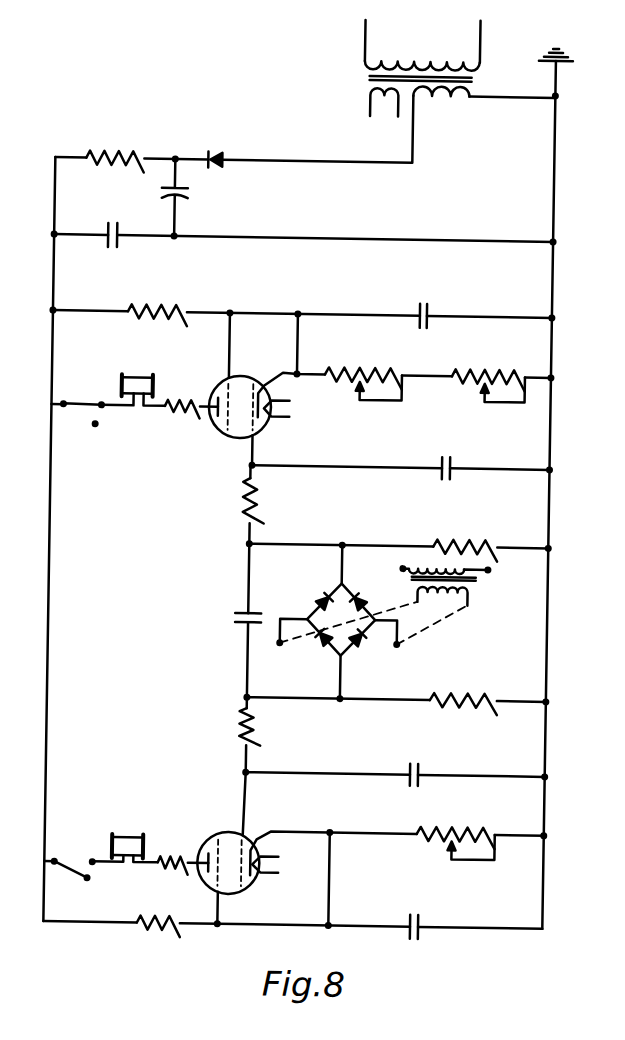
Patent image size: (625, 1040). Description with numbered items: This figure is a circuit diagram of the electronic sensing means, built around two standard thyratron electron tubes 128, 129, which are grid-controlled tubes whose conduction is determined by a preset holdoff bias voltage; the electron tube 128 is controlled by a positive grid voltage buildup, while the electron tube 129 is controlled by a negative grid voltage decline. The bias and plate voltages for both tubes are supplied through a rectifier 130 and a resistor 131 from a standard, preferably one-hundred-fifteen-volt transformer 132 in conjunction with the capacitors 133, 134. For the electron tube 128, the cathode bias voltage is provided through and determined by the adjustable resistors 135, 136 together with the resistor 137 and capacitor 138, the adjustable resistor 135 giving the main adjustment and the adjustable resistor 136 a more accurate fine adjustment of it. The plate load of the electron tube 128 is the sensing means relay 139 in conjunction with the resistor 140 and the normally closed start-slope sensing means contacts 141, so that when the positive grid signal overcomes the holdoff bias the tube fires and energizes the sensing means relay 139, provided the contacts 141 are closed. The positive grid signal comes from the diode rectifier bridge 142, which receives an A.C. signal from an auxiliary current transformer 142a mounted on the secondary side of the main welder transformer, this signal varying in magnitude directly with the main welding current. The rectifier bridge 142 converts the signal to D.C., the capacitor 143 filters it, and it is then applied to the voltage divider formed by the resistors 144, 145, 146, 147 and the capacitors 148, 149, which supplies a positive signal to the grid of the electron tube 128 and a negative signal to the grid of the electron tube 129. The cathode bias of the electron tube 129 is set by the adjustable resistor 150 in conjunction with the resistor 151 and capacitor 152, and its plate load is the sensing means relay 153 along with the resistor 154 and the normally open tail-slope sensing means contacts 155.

The electron tube 128 is at (218, 389).
The electron tube 129 is at (229, 841).
The rectifier 130 is at (214, 153).
The resistor 131 is at (106, 153).
The transformer 132 is at (389, 58).
The capacitor 133 is at (183, 193).
The capacitor 134 is at (110, 225).
The adjustable resistor 135 is at (358, 369).
The adjustable resistor 136 is at (483, 369).
The resistor 137 is at (147, 305).
The capacitor 138 is at (417, 301).
The sensing means relay 139 is at (135, 386).
The resistor 140 is at (180, 409).
The start-slope sensing means contacts 141 is at (72, 411).
The diode rectifier bridge 142 is at (334, 594).
The auxiliary current transformer 142a is at (490, 573).
The capacitor 143 is at (237, 613).
The resistor 144 is at (441, 538).
The resistor 145 is at (243, 508).
The resistor 146 is at (473, 702).
The resistor 147 is at (242, 723).
The capacitor 148 is at (439, 458).
The capacitor 149 is at (412, 778).
The adjustable resistor 150 is at (463, 830).
The resistor 151 is at (157, 928).
The capacitor 152 is at (410, 934).
The sensing means relay 153 is at (130, 843).
The resistor 154 is at (176, 860).
The tail-slope sensing means contacts 155 is at (73, 862).